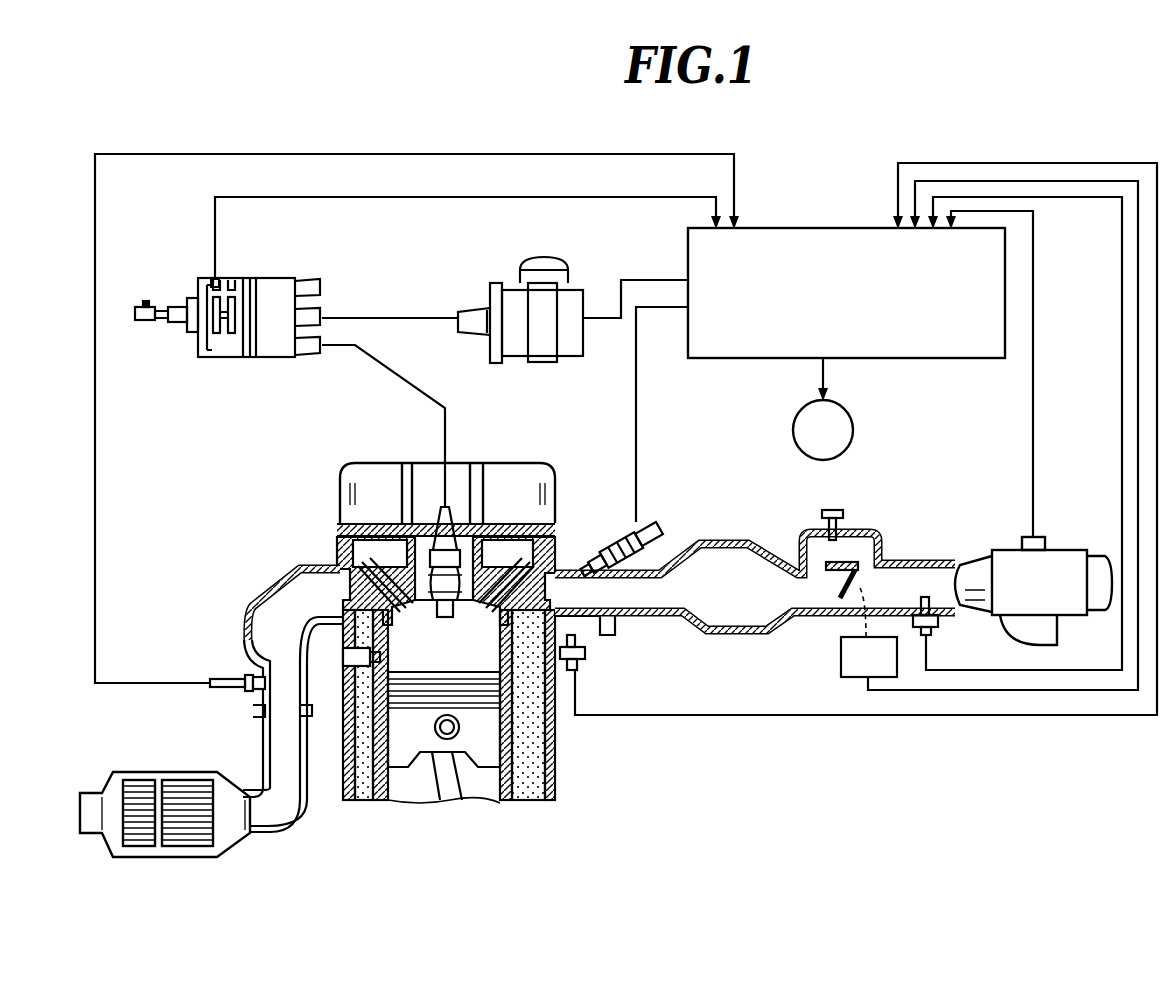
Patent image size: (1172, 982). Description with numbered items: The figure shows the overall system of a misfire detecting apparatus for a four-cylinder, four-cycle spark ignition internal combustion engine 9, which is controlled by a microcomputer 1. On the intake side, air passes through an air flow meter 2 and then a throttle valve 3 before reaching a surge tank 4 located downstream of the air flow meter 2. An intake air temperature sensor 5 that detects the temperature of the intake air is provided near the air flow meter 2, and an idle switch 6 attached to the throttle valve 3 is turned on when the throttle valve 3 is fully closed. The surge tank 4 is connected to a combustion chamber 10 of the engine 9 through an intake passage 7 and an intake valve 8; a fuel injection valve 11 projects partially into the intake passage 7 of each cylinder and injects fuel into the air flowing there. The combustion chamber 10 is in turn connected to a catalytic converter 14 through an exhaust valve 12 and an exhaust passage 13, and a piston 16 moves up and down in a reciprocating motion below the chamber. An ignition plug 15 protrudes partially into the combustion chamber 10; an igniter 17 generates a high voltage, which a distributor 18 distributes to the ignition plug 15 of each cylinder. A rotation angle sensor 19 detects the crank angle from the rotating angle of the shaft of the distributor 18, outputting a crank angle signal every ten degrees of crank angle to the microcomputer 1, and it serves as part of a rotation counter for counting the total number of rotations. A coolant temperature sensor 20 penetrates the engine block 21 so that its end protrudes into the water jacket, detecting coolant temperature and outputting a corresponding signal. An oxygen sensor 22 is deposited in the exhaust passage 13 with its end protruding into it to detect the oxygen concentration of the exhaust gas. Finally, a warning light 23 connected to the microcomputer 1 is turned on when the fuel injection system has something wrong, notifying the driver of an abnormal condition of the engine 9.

The microcomputer 1 is at (965, 360).
The air flow meter 2 is at (1037, 535).
The throttle valve 3 is at (838, 595).
The surge tank 4 is at (722, 567).
The intake air temperature sensor 5 is at (940, 620).
The idle switch 6 is at (862, 678).
The intake passage 7 is at (673, 590).
The intake valve 8 is at (505, 595).
The internal combustion engine 9 is at (522, 478).
The combustion chamber 10 is at (340, 662).
The fuel injection valve 11 is at (608, 530).
The exhaust valve 12 is at (388, 600).
The exhaust passage 13 is at (283, 612).
The catalytic converter 14 is at (238, 838).
The ignition plug 15 is at (437, 527).
The piston 16 is at (402, 755).
The igniter 17 is at (577, 303).
The distributor 18 is at (283, 283).
The rotation angle sensor 19 is at (213, 278).
The coolant temperature sensor 20 is at (580, 668).
The engine block 21 is at (612, 637).
The oxygen sensor 22 is at (227, 688).
The warning light 23 is at (853, 430).